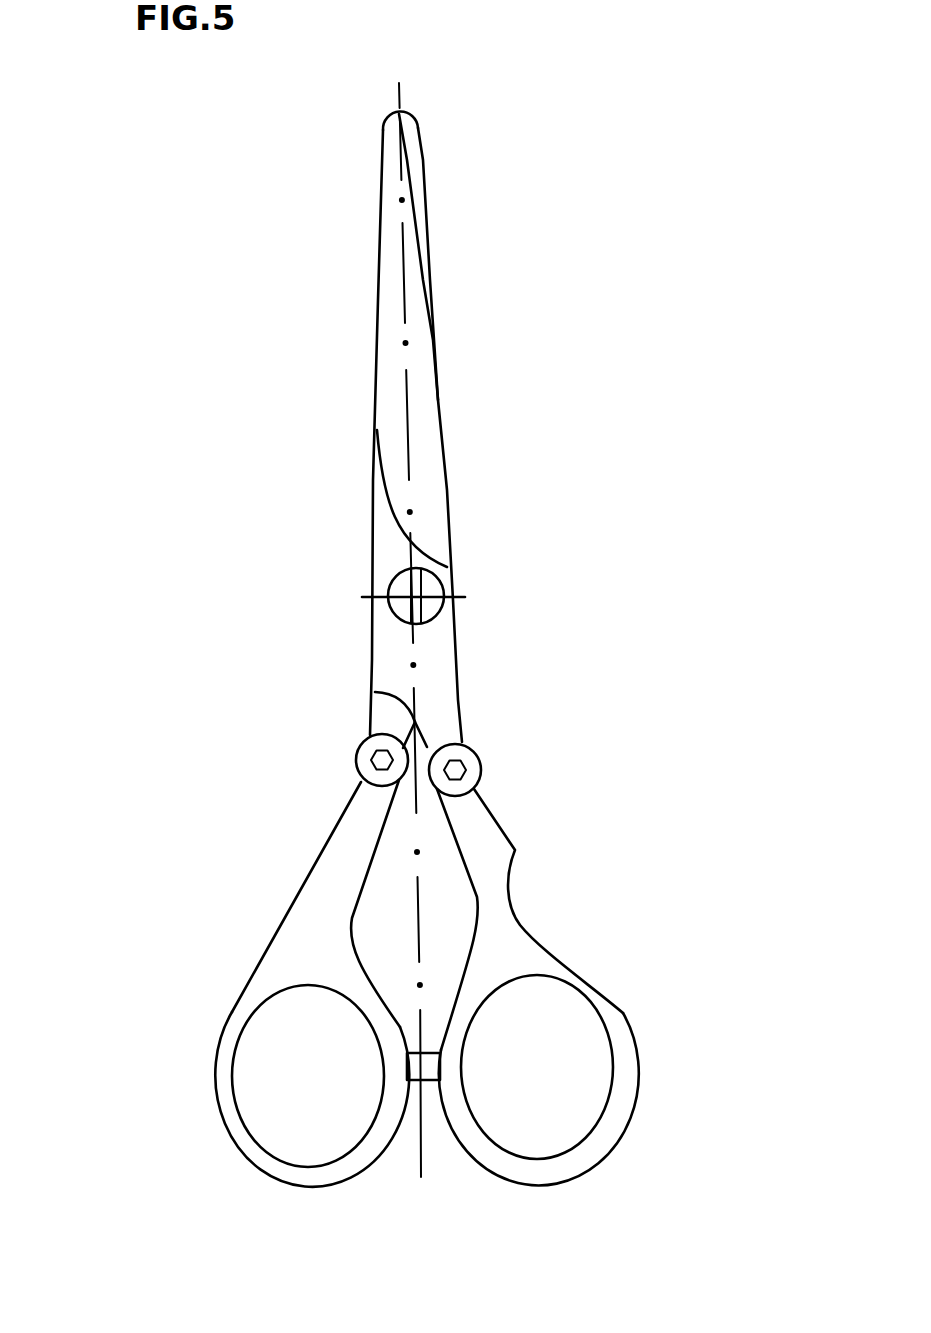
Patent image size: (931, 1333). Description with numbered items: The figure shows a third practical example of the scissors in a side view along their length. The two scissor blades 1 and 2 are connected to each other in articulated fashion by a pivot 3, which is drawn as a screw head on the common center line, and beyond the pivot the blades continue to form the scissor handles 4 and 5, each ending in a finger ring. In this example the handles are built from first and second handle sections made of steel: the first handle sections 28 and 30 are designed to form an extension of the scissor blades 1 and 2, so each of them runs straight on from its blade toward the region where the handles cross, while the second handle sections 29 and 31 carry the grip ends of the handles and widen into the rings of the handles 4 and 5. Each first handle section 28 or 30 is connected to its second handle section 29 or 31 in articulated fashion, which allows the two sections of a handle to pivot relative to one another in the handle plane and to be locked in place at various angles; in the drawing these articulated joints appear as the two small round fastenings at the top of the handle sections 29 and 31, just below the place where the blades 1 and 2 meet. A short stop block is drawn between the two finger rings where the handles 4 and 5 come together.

The scissor blade 1 is at (447, 226).
The scissor blade 2 is at (362, 317).
The pivot 3 is at (428, 590).
The first handle section 28 is at (462, 728).
The first handle section 30 is at (367, 720).
The second handle section 29 is at (515, 850).
The second handle section 31 is at (313, 898).
The scissor handle 4 is at (566, 917).
The scissor handle 5 is at (222, 988).